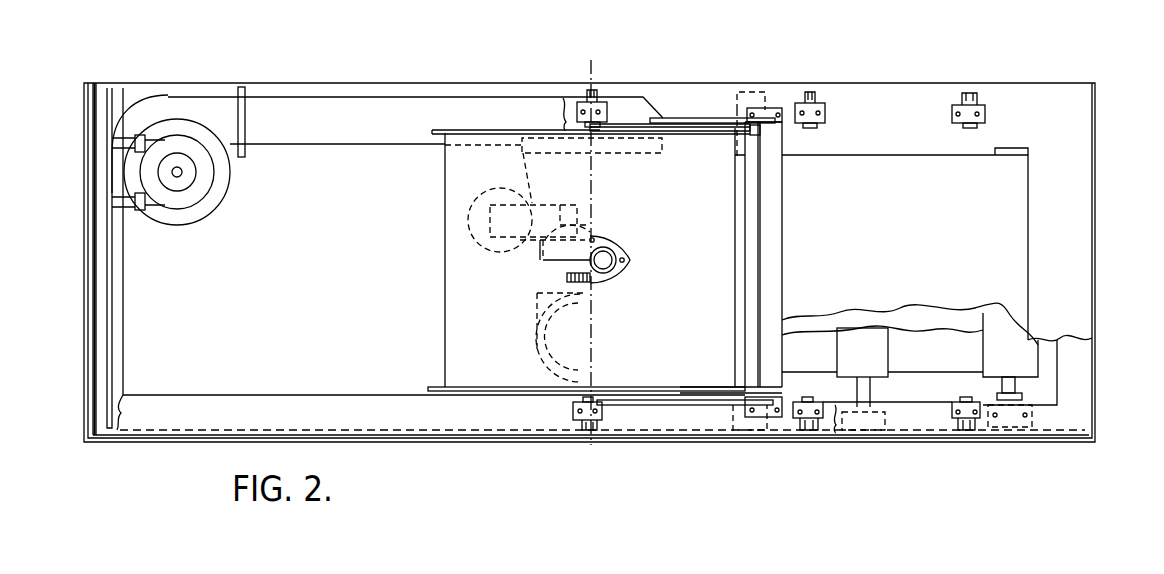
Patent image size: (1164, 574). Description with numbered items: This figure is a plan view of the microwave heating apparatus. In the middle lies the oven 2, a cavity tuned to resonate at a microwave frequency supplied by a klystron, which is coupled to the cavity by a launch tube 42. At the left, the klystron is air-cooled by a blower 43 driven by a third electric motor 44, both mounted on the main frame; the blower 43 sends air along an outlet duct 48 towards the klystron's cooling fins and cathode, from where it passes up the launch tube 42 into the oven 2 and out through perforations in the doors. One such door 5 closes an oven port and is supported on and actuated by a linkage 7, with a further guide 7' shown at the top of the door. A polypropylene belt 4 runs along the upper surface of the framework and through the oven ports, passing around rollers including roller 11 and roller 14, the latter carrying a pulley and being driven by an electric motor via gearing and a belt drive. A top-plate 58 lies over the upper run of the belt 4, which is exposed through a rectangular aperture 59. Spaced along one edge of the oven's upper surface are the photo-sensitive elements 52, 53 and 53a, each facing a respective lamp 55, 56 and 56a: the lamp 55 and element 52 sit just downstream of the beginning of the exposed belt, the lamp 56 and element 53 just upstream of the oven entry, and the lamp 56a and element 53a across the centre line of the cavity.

The oven 2 is at (670, 375).
The polypropylene belt 4 is at (1000, 207).
The door 5 is at (768, 198).
The linkage 7 is at (689, 435).
The upper guide bracket 7' is at (716, 98).
The roller 11 is at (1018, 358).
The roller 14 is at (877, 357).
The launch tube 42 is at (535, 350).
The blower 43 is at (130, 187).
The third electric motor 44 is at (150, 172).
The outlet duct 48 is at (357, 122).
The photo-sensitive element 52 is at (972, 418).
The photo-sensitive element 53 is at (808, 425).
The photo-sensitive element 53a is at (573, 420).
The lamp 55 is at (963, 92).
The lamp 56 is at (800, 88).
The lamp 56a is at (597, 93).
The top-plate 58 is at (1063, 248).
The rectangular aperture 59 is at (1005, 292).